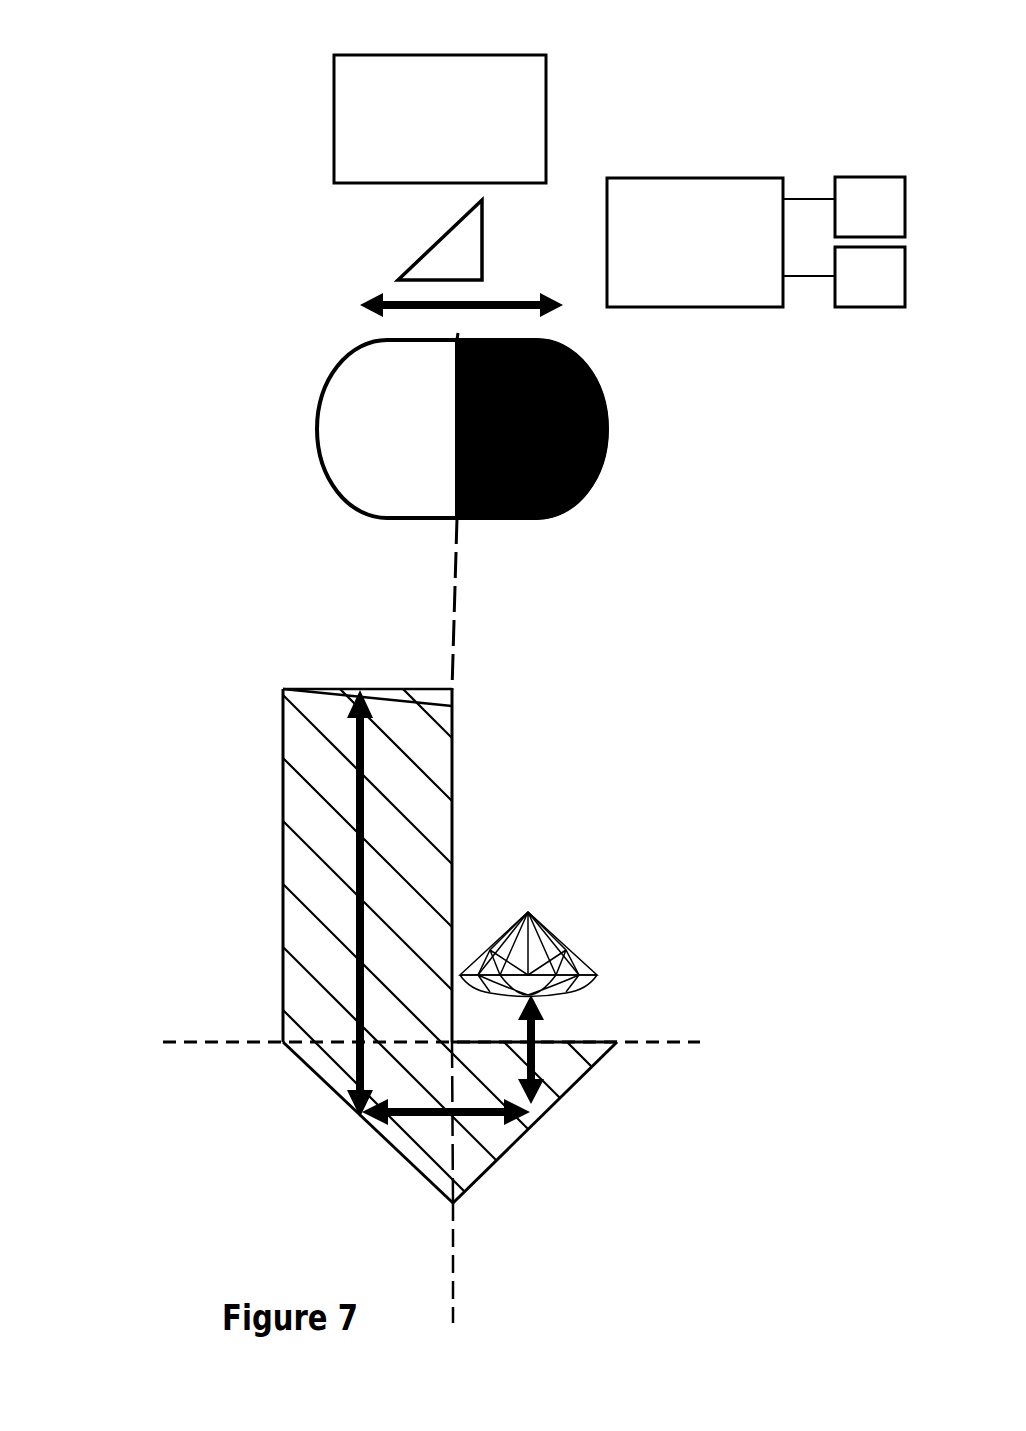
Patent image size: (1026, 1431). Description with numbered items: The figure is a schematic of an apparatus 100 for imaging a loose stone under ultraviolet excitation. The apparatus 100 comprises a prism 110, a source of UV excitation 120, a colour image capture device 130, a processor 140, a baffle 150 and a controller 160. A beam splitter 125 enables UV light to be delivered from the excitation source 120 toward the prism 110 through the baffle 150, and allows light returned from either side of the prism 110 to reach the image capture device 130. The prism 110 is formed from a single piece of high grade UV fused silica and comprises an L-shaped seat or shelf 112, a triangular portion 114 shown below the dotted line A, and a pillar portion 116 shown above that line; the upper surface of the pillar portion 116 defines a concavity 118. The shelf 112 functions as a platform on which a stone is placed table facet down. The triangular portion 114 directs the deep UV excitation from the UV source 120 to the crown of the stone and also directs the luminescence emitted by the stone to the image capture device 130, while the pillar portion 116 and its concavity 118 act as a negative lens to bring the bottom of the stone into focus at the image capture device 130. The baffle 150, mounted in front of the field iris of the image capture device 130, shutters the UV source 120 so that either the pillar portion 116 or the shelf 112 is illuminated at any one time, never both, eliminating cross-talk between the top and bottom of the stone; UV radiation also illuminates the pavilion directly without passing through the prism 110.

The apparatus 100 is at (130, 76).
The prism 110 is at (175, 842).
The L-shaped seat or shelf 112 is at (600, 1040).
The triangular portion 114 is at (547, 1115).
The pillar portion 116 is at (283, 770).
The concavity 118 is at (417, 705).
The source of UV excitation 120 is at (413, 139).
The beam splitter 125 is at (430, 250).
The colour image capture device 130 is at (668, 266).
The processor 140 is at (845, 229).
The baffle 150 is at (317, 427).
The controller 160 is at (845, 298).